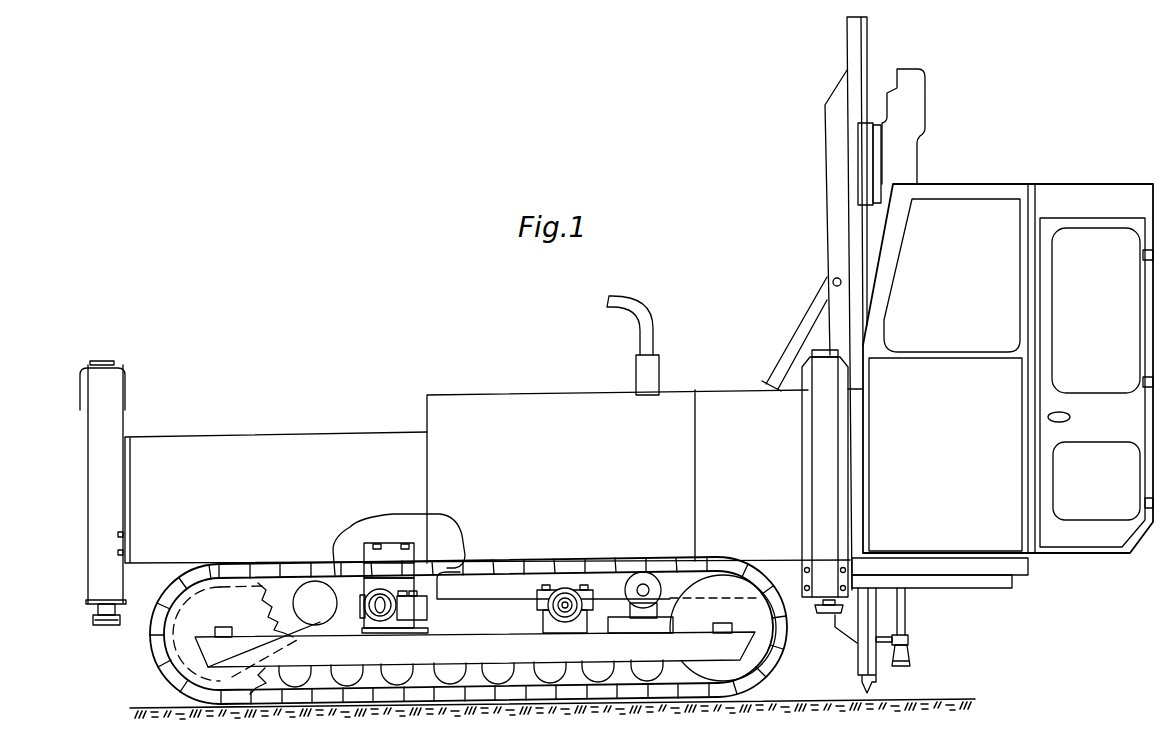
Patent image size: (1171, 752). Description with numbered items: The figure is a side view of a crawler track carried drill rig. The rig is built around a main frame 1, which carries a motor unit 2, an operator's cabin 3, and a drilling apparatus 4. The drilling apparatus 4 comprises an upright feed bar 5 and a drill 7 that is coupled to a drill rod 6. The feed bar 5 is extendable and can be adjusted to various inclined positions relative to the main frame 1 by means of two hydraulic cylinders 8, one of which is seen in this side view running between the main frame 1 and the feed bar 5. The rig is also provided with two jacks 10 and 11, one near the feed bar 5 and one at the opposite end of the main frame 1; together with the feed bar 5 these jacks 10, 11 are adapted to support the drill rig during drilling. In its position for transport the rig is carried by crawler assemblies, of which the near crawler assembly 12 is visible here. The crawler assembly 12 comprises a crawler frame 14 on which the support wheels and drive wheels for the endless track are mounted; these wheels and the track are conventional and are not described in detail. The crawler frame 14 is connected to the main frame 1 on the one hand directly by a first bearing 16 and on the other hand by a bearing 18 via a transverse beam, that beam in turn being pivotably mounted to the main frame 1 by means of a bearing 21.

The main frame 1 is at (503, 583).
The motor unit 2 is at (625, 493).
The operator's cabin 3 is at (1080, 192).
The drilling apparatus 4 is at (823, 204).
The feed bar 5 is at (862, 50).
The drill rod 6 is at (903, 623).
The drill 7 is at (913, 113).
The hydraulic cylinders 8 is at (763, 380).
The jack 10 is at (817, 450).
The jack 11 is at (112, 420).
The crawler assembly 12 is at (592, 556).
The crawler frame 14 is at (502, 663).
The first bearing 16 is at (536, 613).
The bearing 18 is at (432, 617).
The bearing 21 is at (352, 545).